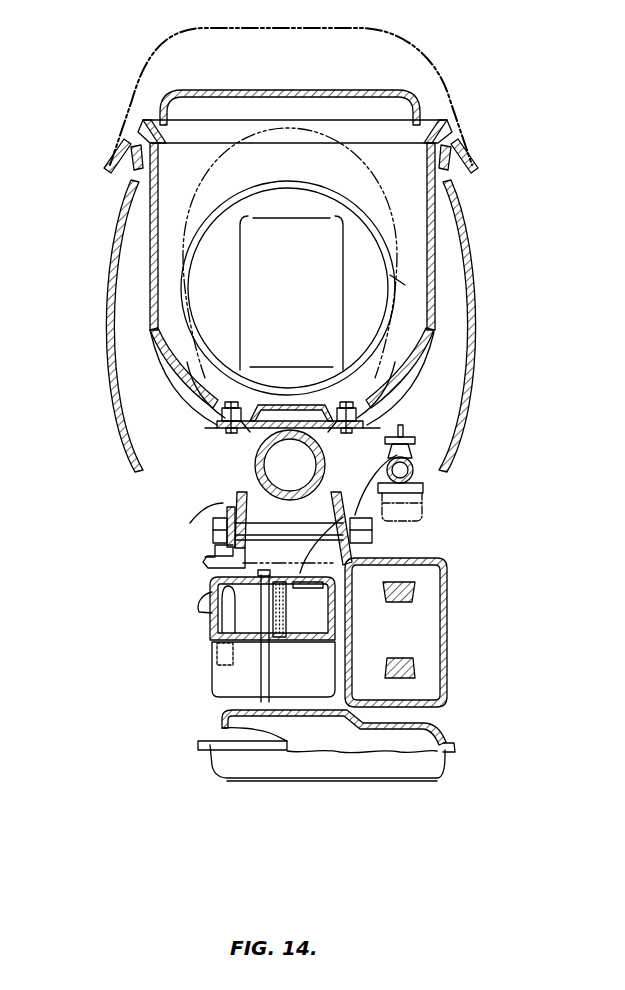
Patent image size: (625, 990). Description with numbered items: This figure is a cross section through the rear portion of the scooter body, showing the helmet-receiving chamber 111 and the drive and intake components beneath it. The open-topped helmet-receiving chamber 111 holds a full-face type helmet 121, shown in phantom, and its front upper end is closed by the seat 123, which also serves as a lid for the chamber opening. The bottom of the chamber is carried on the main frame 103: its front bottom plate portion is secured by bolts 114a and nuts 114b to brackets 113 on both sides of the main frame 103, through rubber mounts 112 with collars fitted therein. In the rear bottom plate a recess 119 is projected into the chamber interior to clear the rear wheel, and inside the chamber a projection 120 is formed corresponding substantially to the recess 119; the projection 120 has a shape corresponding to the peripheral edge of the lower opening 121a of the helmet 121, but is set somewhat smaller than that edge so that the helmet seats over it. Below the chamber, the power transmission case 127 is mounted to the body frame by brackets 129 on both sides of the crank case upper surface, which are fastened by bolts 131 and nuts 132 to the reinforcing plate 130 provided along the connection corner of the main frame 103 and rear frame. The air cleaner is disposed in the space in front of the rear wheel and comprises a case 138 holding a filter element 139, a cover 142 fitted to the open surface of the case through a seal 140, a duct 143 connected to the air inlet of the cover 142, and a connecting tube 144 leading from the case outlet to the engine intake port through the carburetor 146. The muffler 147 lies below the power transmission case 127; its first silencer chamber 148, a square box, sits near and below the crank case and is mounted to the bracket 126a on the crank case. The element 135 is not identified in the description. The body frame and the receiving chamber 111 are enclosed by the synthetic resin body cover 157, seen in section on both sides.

The main frame 103 is at (212, 530).
The helmet-receiving chamber 111 is at (437, 133).
The rubber mount 112 is at (380, 405).
The bracket 113 is at (380, 421).
The bolt 114a is at (350, 400).
The nut 114b is at (240, 433).
The recess 119 is at (328, 245).
The projection 120 is at (373, 264).
The full-face type helmet 121 is at (368, 178).
The lower opening 121a is at (395, 283).
The seat 123 is at (440, 46).
The bracket 126a is at (210, 548).
The power transmission case 127 is at (447, 637).
The bracket 129 is at (405, 567).
The reinforcing plate 130 is at (250, 488).
The bolt 131 is at (378, 532).
The nut 132 is at (212, 585).
The support blocks 135 is at (392, 598).
The case 138 is at (310, 690).
The filter element 139 is at (280, 690).
The seal 140 is at (202, 745).
The cover 142 is at (215, 693).
The duct 143 is at (210, 595).
The connecting tube 144 is at (380, 502).
The carburetor 146 is at (432, 494).
The muffler 147 is at (222, 788).
The first silencer chamber 148 is at (445, 717).
The body cover 157 is at (470, 225).